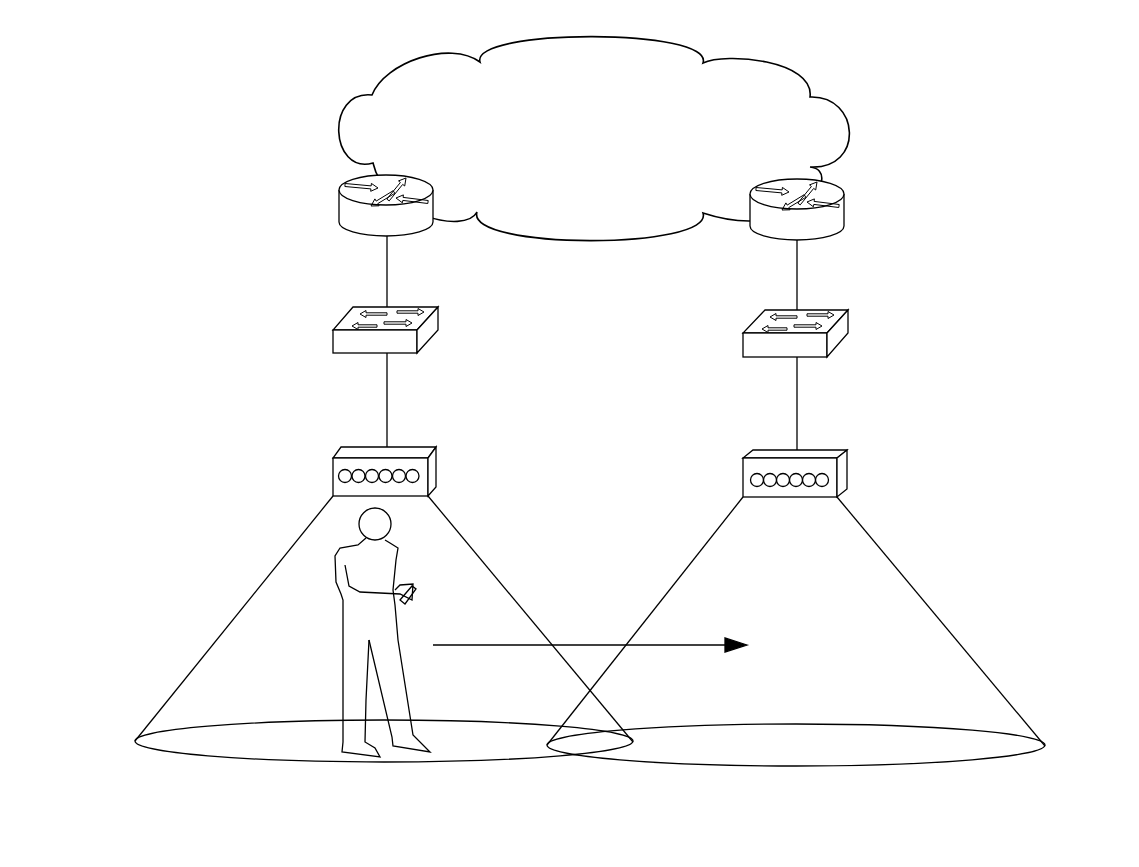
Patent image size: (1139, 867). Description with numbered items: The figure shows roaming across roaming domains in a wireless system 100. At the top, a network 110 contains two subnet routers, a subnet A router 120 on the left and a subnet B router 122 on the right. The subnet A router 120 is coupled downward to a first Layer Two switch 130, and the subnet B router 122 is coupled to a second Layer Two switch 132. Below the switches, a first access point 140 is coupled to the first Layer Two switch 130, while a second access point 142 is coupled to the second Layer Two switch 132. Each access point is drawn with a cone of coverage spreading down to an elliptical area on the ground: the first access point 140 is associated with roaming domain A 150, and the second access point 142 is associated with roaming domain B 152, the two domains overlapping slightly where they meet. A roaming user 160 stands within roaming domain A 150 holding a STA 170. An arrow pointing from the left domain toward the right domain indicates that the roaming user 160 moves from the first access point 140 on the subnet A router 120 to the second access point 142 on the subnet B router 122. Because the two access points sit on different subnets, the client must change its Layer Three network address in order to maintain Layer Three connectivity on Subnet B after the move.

The wireless system 100 is at (258, 97).
The network 110 is at (825, 150).
The subnet A router 120 is at (360, 237).
The subnet B router 122 is at (838, 178).
The first Layer 2 switch 130 is at (362, 357).
The second Layer 2 switch 132 is at (838, 310).
The first access point 140 is at (333, 466).
The second access point 142 is at (828, 448).
The roaming domain A 150 is at (293, 783).
The roaming domain B 152 is at (887, 790).
The roaming user 160 is at (333, 585).
The STA 170 is at (413, 590).